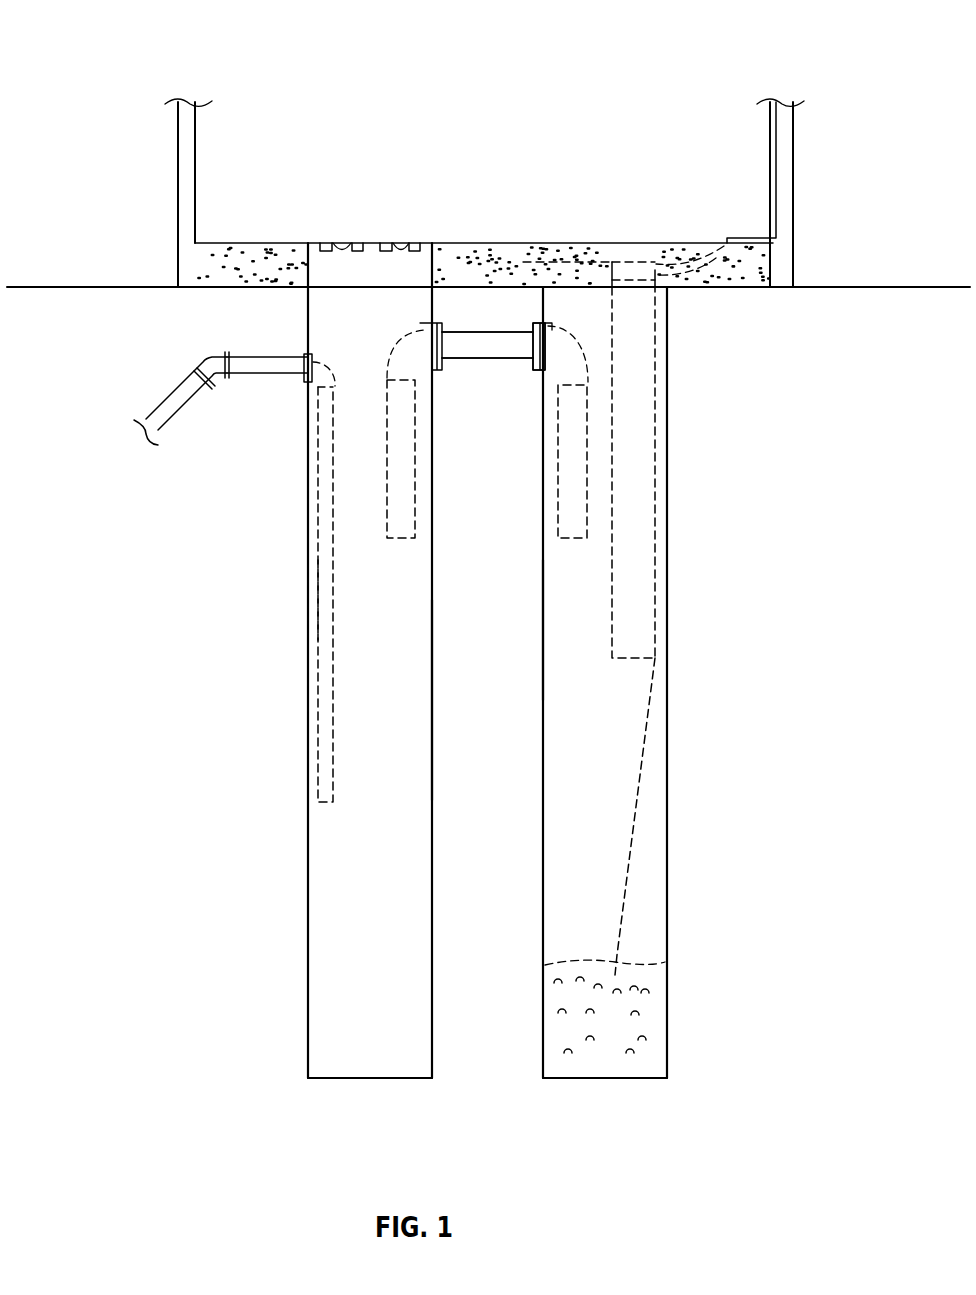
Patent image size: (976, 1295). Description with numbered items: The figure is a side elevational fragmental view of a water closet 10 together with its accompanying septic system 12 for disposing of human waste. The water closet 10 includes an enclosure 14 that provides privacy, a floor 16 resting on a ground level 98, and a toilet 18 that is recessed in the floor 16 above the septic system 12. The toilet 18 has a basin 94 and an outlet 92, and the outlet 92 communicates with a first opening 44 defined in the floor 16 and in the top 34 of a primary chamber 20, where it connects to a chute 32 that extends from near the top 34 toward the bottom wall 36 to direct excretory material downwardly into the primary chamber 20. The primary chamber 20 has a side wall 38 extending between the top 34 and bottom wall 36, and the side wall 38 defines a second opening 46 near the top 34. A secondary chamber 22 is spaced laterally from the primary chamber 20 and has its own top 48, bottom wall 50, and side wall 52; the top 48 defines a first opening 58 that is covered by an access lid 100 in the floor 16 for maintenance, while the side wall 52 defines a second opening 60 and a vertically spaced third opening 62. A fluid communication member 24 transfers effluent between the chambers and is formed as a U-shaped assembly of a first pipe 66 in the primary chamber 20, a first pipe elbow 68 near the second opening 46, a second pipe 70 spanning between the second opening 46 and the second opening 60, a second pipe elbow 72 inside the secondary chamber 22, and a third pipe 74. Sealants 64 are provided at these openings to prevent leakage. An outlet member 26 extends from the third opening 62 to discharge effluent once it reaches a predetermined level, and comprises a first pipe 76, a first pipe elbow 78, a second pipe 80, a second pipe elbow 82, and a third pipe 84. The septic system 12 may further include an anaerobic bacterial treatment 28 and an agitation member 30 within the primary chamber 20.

The water closet 10 is at (90, 42).
The septic system 12 is at (110, 681).
The enclosure 14 is at (178, 165).
The floor 16 is at (238, 243).
The toilet 18 is at (628, 243).
The primary chamber 20 is at (542, 665).
The secondary chamber 22 is at (305, 763).
The fluid communication member 24 is at (510, 362).
The outlet member 26 is at (262, 357).
The anaerobic bacterial treatment 28 is at (568, 1052).
The agitation member 30 is at (638, 802).
The chute 32 is at (655, 507).
The top 34 is at (597, 294).
The bottom wall 36 is at (640, 1078).
The side wall 38 is at (547, 617).
The first opening 44 is at (597, 287).
The second opening 46 is at (540, 370).
The top 48 is at (344, 241).
The bottom wall 50 is at (350, 1078).
The side wall 52 is at (423, 693).
The first opening 58 is at (404, 241).
The second opening 60 is at (440, 367).
The third opening 62 is at (305, 385).
The sealants 64 is at (437, 325).
The first pipe 66 is at (558, 487).
The first pipe elbow 68 is at (573, 347).
The second pipe 70 is at (500, 332).
The second pipe elbow 72 is at (407, 344).
The third pipe 74 is at (387, 462).
The first pipe 76 is at (307, 590).
The first pipe elbow 78 is at (318, 355).
The second pipe 80 is at (250, 375).
The second pipe elbow 82 is at (210, 358).
The third pipe 84 is at (176, 421).
The outlet 92 is at (698, 247).
The basin 94 is at (552, 258).
The ground level 98 is at (108, 286).
The access lid 100 is at (323, 243).